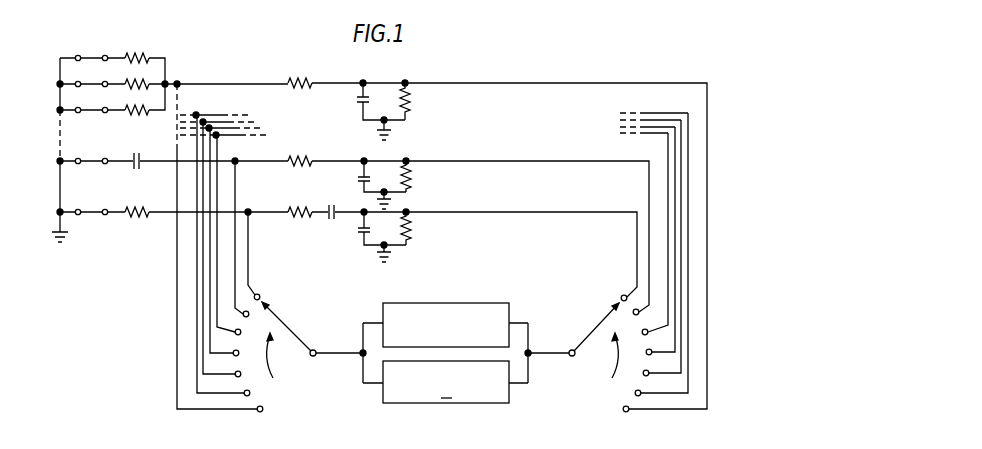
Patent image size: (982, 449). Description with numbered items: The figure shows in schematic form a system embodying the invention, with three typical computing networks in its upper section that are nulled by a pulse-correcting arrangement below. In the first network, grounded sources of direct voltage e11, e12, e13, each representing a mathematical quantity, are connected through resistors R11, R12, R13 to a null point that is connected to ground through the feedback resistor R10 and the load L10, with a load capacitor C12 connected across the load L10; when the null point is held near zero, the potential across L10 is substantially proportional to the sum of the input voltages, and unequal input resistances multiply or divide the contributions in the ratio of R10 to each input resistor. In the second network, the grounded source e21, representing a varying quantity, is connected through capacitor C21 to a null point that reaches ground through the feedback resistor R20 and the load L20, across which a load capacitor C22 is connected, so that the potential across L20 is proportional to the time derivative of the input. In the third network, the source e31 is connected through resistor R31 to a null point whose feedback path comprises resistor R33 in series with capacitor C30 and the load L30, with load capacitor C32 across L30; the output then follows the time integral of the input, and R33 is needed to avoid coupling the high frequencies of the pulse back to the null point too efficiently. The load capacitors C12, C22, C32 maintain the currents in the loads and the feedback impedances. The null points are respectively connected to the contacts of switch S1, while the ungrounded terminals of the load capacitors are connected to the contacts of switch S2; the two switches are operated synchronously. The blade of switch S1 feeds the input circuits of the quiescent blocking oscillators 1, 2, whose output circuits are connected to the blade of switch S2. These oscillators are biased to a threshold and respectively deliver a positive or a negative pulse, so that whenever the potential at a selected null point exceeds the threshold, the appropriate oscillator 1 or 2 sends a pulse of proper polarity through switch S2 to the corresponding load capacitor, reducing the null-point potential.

The blocking oscillator 1 is at (450, 303).
The blocking oscillator 2 is at (437, 403).
The switch S1 is at (289, 340).
The switch S2 is at (594, 340).
The feedback resistor R10 is at (296, 79).
The resistor R11 is at (140, 52).
The resistor R12 is at (138, 80).
The resistor R13 is at (138, 106).
The feedback resistor R20 is at (296, 157).
The resistor R31 is at (140, 204).
The resistor R33 is at (302, 207).
The load capacitor C12 is at (356, 102).
The capacitor C21 is at (143, 148).
The load capacitor C22 is at (358, 177).
The capacitor C30 is at (338, 201).
The load capacitor C32 is at (358, 234).
The load L10 is at (413, 100).
The load L20 is at (413, 175).
The load L30 is at (413, 230).
The source of direct voltage e11 is at (91, 58).
The source of direct voltage e12 is at (91, 84).
The source of direct voltage e13 is at (91, 110).
The source of direct voltage e21 is at (91, 161).
The source of direct voltage e31 is at (91, 212).